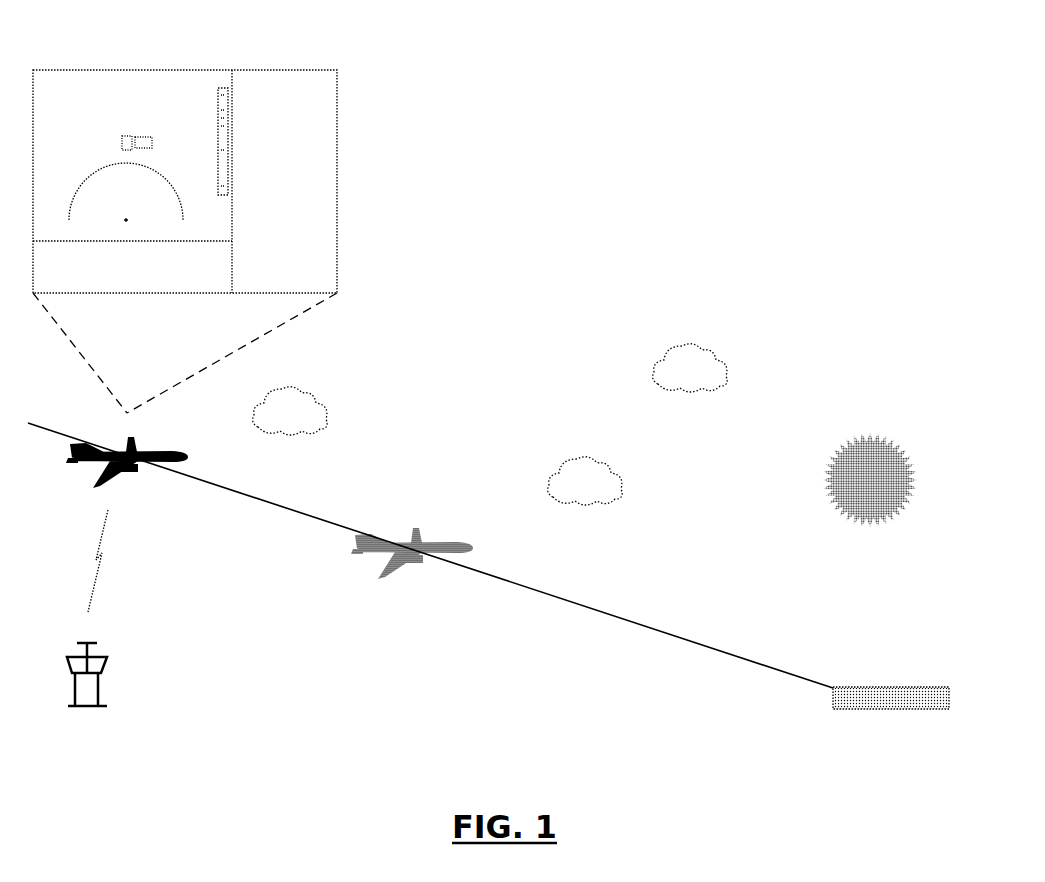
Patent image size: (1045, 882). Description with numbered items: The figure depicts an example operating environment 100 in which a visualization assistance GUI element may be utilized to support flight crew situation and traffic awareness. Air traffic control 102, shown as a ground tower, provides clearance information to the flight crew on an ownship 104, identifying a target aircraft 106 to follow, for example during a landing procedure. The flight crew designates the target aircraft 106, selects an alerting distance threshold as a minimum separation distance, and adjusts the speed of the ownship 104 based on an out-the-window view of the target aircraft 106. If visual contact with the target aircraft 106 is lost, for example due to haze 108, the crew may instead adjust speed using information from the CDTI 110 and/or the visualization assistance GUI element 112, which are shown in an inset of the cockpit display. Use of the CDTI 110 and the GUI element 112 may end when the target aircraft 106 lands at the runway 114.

The operating environment 100 is at (625, 235).
The air traffic control 102 is at (87, 641).
The ownship 104 is at (173, 449).
The target aircraft 106 is at (445, 538).
The haze 108 is at (499, 393).
The CDTI 110 is at (110, 100).
The visualization assistance GUI element 112 is at (220, 84).
The runway 114 is at (891, 687).